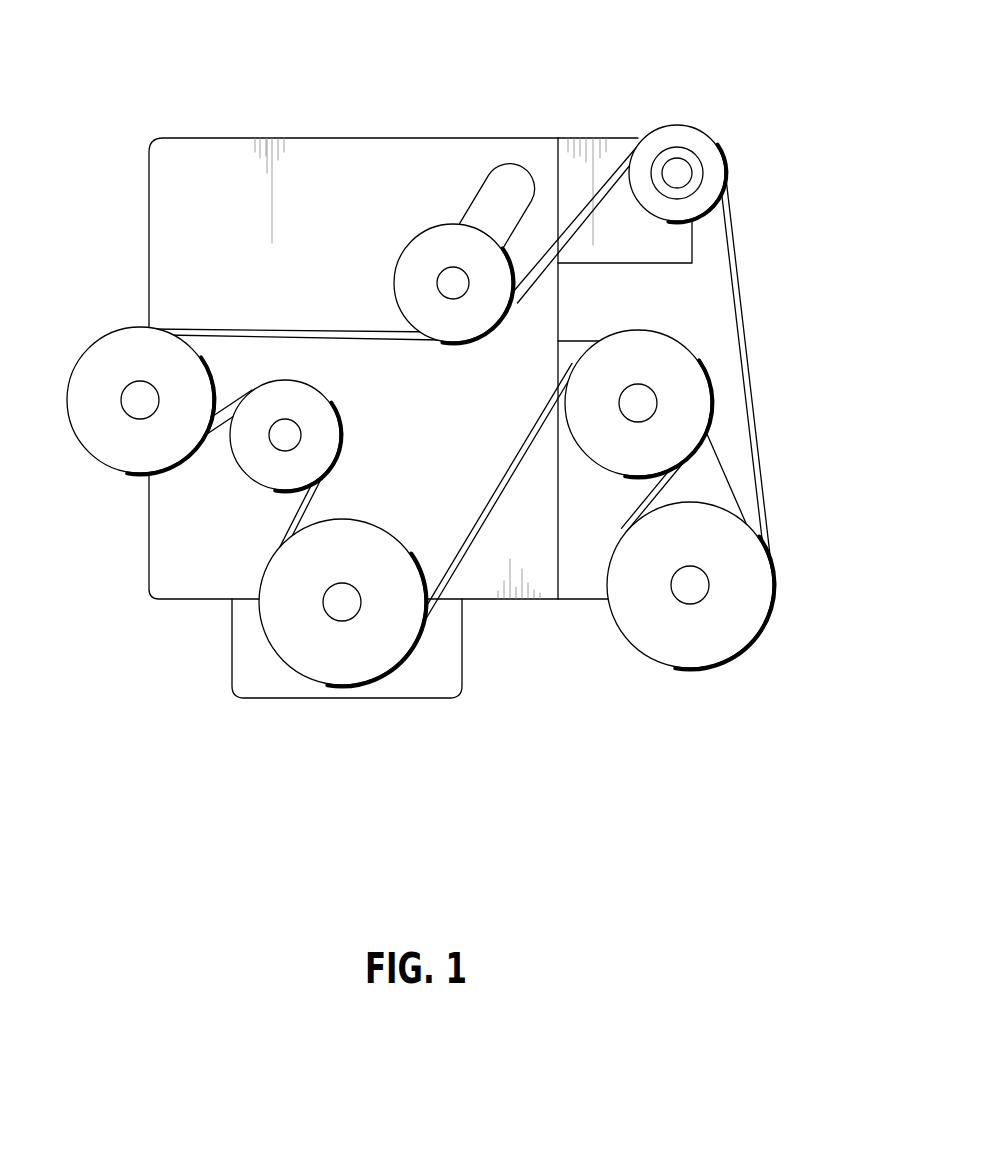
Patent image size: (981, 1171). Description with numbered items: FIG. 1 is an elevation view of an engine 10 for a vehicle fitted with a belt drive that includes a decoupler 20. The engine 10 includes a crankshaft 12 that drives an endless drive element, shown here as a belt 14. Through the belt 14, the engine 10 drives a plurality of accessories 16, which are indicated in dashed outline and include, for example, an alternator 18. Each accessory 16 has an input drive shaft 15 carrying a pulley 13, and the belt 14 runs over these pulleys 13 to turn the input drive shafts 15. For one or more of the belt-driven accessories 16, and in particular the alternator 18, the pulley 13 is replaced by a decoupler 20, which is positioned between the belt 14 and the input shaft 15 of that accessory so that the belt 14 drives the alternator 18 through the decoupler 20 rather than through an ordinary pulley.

The engine 10 is at (121, 137).
The crankshaft 12 is at (342, 607).
The pulley 13 is at (107, 452).
The belt 14 is at (463, 558).
The input drive shaft 15 is at (140, 402).
The accessories 16 is at (122, 357).
The alternator 18 is at (668, 103).
The decoupler 20 is at (690, 208).